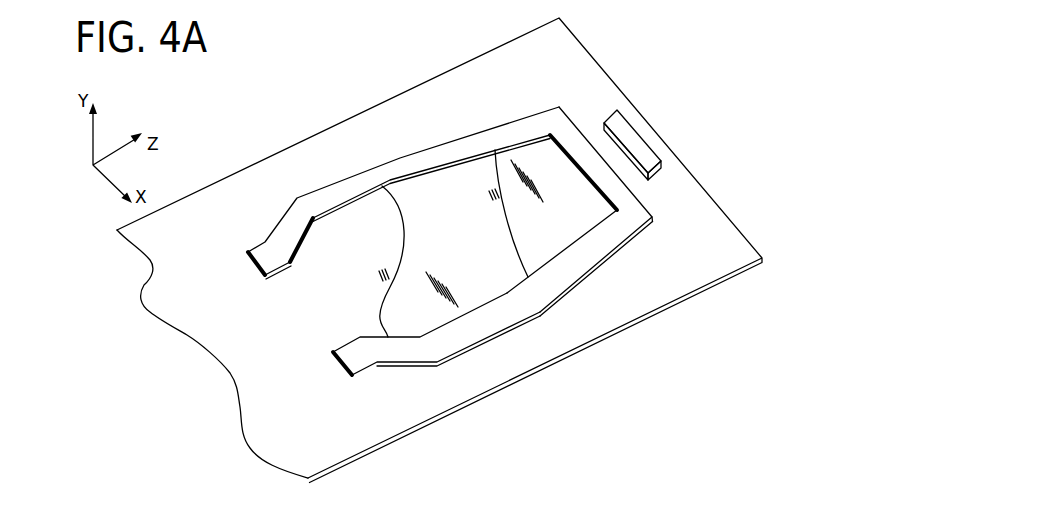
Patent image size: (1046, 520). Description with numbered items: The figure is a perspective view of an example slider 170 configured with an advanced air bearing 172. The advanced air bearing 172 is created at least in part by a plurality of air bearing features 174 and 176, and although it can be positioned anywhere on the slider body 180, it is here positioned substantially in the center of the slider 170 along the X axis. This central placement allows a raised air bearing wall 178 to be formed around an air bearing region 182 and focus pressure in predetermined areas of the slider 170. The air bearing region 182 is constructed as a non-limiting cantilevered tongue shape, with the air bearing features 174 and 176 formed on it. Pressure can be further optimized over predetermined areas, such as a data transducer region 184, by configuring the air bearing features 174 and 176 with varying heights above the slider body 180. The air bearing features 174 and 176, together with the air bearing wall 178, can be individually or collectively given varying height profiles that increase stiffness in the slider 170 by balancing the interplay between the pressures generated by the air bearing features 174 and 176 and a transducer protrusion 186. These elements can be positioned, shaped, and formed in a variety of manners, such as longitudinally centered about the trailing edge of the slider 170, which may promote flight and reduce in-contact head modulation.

The slider 170 is at (735, 33).
The advanced air bearing 172 is at (491, 108).
The air bearing feature 174 is at (494, 304).
The air bearing feature 176 is at (590, 235).
The raised air bearing wall 178 is at (372, 163).
The slider body 180 is at (728, 281).
The air bearing region 182 is at (318, 318).
The data transducer region 184 is at (653, 116).
The transducer protrusion 186 is at (659, 178).